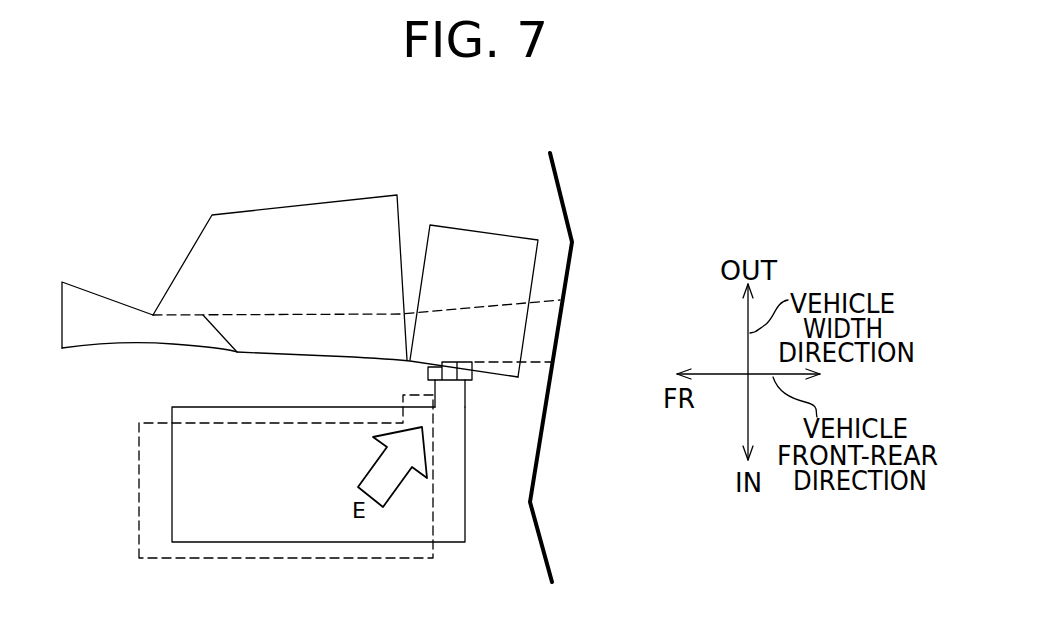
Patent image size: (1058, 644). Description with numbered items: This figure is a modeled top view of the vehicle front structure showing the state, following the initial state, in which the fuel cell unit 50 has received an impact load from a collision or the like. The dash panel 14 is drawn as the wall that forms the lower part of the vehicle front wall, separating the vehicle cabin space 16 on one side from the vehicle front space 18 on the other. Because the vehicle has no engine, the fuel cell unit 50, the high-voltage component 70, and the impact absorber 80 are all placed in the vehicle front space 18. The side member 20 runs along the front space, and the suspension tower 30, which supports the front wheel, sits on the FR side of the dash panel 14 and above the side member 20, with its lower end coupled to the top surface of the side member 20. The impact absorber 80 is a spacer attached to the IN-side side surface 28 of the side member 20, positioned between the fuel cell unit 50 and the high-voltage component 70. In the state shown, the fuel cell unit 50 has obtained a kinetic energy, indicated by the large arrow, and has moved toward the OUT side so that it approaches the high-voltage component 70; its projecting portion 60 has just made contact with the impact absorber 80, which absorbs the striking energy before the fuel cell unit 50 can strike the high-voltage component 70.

The dash panel 14 is at (558, 183).
The vehicle cabin space 16 is at (597, 570).
The vehicle front space 18 is at (528, 570).
The side member 20 is at (108, 306).
The IN-side side surface 28 is at (168, 351).
The suspension tower 30 is at (335, 227).
The fuel cell unit 50 is at (195, 483).
The projecting portion 60 is at (455, 393).
The high-voltage component 70 is at (483, 245).
The impact absorber 80 is at (417, 373).